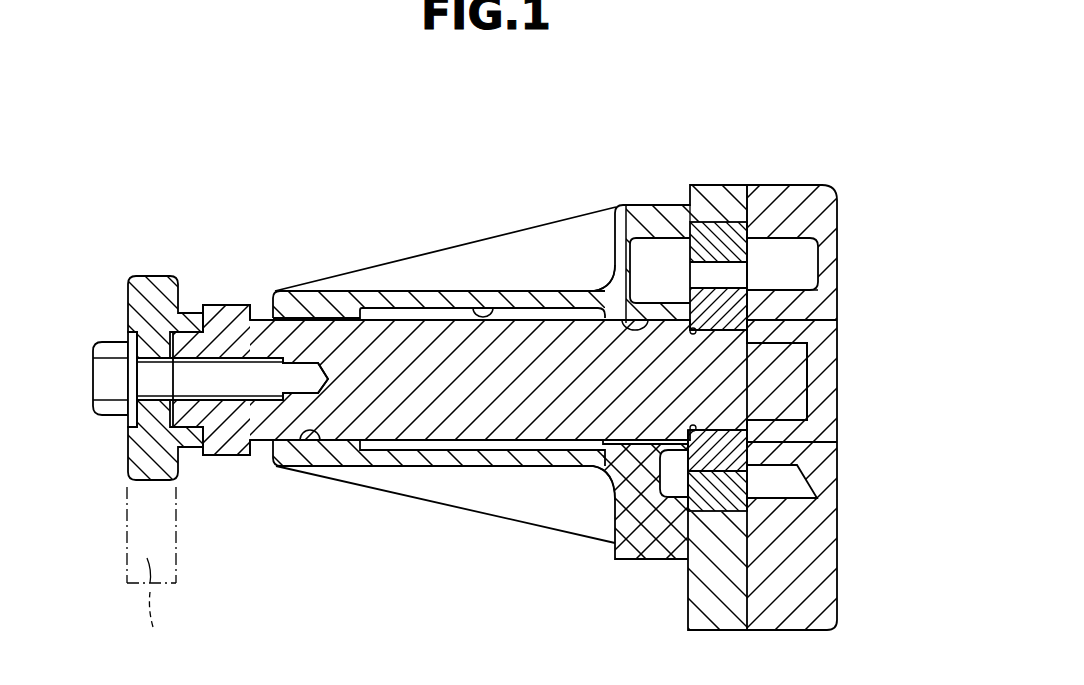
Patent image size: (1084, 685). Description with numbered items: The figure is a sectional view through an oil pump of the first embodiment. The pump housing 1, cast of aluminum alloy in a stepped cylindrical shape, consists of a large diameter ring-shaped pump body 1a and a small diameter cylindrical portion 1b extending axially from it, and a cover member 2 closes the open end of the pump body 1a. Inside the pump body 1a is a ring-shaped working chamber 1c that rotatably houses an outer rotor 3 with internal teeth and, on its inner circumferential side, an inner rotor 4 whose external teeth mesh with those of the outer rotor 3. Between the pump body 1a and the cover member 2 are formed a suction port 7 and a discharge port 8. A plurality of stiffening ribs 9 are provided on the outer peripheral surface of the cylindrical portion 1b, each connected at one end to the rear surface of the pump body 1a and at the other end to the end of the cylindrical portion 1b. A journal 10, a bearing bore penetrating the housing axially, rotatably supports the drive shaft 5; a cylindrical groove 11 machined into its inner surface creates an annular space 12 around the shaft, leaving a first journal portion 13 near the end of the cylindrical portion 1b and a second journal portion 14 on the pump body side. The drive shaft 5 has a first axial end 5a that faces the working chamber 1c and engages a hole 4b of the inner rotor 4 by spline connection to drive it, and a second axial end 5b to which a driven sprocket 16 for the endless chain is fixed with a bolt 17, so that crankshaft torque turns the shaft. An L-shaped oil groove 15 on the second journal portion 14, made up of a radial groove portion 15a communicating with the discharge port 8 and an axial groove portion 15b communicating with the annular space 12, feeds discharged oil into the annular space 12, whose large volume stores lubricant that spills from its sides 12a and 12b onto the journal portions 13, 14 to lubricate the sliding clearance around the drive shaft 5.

The pump housing 1 is at (650, 198).
The pump body 1a is at (655, 255).
The cylindrical portion 1b is at (460, 311).
The working chamber 1c is at (752, 230).
The cover member 2 is at (822, 207).
The outer rotor 3 is at (727, 250).
The inner rotor 4 is at (723, 308).
The hole of inner rotor 4b is at (727, 427).
The drive shaft 5 is at (530, 385).
The first axial end 5a is at (757, 367).
The second axial end 5b is at (255, 436).
The suction port 7 is at (712, 235).
The discharge port 8 is at (663, 442).
The stiffening ribs 9 is at (542, 224).
The journal 10 is at (361, 430).
The cylindrical groove 11 is at (490, 312).
The annular space 12 is at (428, 305).
The side of annular space 12a is at (377, 303).
The side of annular space 12b is at (587, 290).
The first journal portion 13 is at (305, 433).
The second journal portion 14 is at (626, 204).
The oil groove 15 is at (603, 450).
The radial groove portion 15a is at (683, 450).
The axial groove portion 15b is at (605, 470).
The driven sprocket 16 is at (153, 453).
The bolt 17 is at (162, 378).